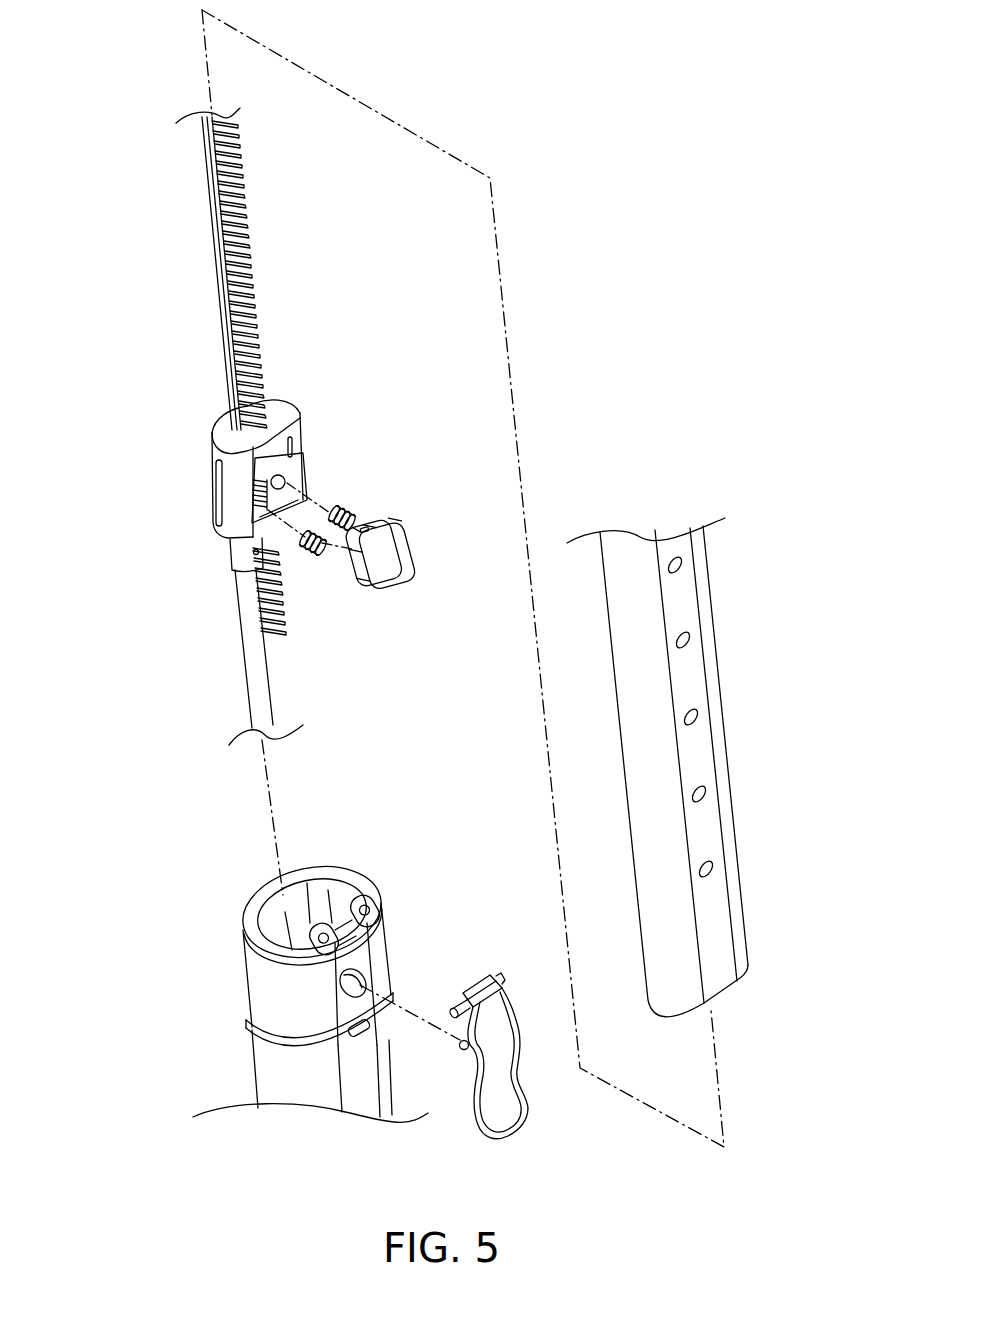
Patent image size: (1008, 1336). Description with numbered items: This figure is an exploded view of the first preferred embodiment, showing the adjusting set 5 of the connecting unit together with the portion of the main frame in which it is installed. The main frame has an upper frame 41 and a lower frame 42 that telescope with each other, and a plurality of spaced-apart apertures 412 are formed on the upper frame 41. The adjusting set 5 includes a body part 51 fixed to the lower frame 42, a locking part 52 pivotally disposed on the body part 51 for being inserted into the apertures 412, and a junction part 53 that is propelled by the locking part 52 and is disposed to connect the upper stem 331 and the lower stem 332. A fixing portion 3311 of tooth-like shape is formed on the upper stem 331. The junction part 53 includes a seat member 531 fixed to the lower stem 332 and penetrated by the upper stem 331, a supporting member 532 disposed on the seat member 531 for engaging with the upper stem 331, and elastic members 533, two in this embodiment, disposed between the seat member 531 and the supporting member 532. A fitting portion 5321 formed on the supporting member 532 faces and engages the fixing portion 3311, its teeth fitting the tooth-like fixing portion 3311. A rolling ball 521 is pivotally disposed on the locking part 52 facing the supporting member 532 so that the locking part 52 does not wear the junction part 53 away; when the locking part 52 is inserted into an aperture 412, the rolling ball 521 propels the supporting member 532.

The adjusting set 5 is at (177, 399).
The upper frame 41 is at (688, 598).
The apertures 412 is at (700, 797).
The lower frame 42 is at (277, 1080).
The body part 51 is at (262, 913).
The locking part 52 is at (507, 1107).
The rolling ball 521 is at (470, 1047).
The junction part 53 is at (213, 462).
The seat member 531 is at (280, 412).
The supporting member 532 is at (396, 518).
The fitting portion 5321 is at (374, 527).
The elastic member 533 is at (313, 553).
The upper stem 331 is at (217, 243).
The fixing portion 3311 is at (242, 250).
The lower stem 332 is at (253, 655).